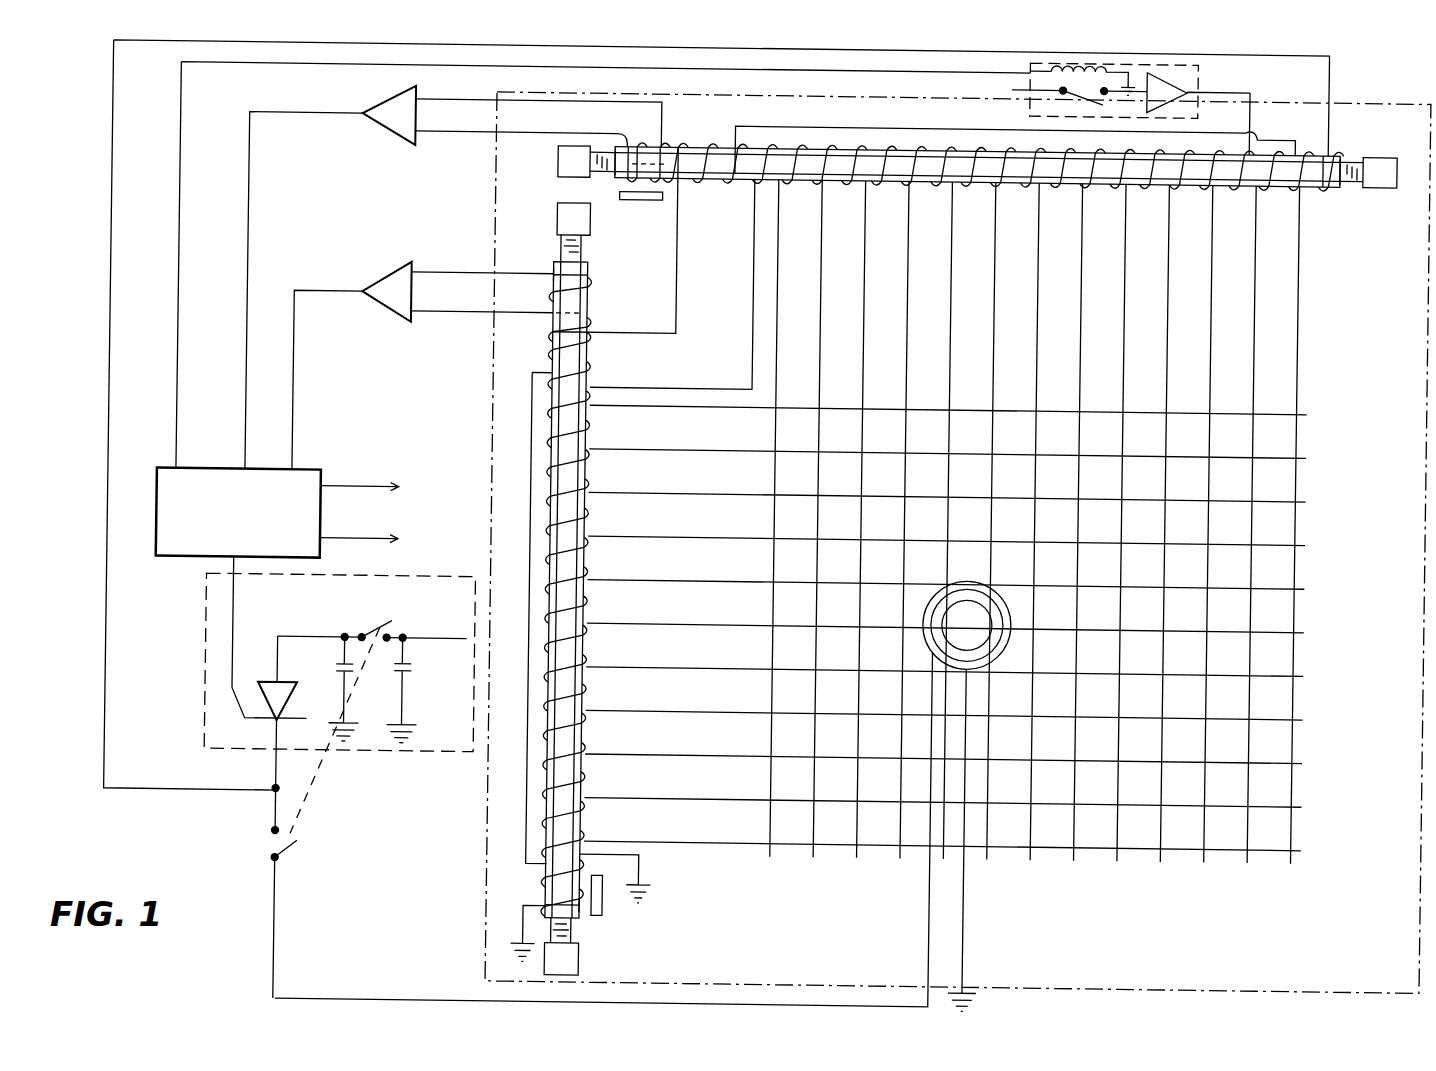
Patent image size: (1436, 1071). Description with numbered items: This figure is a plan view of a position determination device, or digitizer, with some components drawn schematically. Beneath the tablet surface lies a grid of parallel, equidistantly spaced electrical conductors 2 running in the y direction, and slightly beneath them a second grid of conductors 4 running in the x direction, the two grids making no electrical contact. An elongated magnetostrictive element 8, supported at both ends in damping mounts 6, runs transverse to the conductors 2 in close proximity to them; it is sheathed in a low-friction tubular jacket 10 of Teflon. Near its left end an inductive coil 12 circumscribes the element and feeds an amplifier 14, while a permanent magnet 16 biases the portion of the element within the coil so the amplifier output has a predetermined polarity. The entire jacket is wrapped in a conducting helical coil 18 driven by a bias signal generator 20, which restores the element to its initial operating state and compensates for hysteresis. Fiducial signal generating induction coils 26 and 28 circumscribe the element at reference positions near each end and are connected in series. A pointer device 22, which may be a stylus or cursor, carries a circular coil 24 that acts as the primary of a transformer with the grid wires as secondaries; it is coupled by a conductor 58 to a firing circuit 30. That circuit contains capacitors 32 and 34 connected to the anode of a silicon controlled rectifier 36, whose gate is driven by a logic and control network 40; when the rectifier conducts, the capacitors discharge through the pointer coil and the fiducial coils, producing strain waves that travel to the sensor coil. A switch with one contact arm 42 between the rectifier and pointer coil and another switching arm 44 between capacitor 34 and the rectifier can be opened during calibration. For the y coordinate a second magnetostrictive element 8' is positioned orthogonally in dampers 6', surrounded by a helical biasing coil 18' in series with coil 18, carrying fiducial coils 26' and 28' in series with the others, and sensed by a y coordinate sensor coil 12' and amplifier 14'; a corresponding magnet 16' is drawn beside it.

The electrical conductors 2 is at (977, 549).
The conductors 4 is at (839, 449).
The damping mounts 6 is at (959, 156).
The dampers 6' is at (589, 947).
The magnetostrictive element 8 is at (1353, 200).
The magnetostrictive element 8' is at (550, 232).
The tubular jacket or sleeve 10 is at (865, 160).
The inductive coil 12 is at (553, 141).
The y coordinate sensor coil 12' is at (540, 531).
The amplifier 14 is at (330, 275).
The amplifier 14' is at (352, 351).
The permanent magnet 16 is at (641, 218).
The damper 16' is at (622, 907).
The helical coil 18 is at (1004, 138).
The helical biasing coil 18' is at (550, 646).
The bias signal generator 20 is at (1190, 66).
The pointer device 22 is at (937, 592).
The circular coil 24 is at (935, 626).
The fiducial signal generating induction coil 26 is at (671, 196).
The fiducial signal generating coil 26' is at (604, 321).
The fiducial signal generating induction coil 28 is at (1332, 220).
The fiducial signal generating coil 28' is at (500, 885).
The firing circuit 30 is at (418, 757).
The capacitor 32 is at (338, 673).
The capacitor 34 is at (413, 675).
The silicon controlled rectifier 36 is at (276, 688).
The logic and control network 40 is at (171, 567).
The contact arm 42 is at (300, 848).
The switching arm 44 is at (380, 630).
The conductor 58 is at (934, 926).